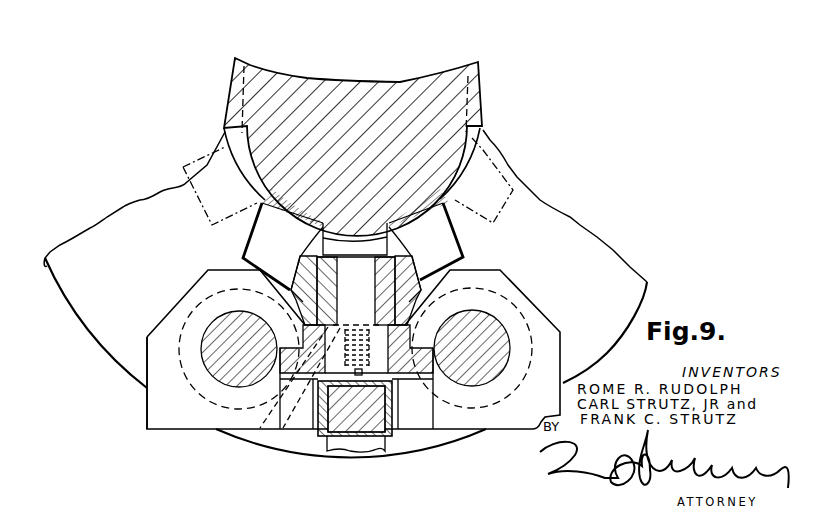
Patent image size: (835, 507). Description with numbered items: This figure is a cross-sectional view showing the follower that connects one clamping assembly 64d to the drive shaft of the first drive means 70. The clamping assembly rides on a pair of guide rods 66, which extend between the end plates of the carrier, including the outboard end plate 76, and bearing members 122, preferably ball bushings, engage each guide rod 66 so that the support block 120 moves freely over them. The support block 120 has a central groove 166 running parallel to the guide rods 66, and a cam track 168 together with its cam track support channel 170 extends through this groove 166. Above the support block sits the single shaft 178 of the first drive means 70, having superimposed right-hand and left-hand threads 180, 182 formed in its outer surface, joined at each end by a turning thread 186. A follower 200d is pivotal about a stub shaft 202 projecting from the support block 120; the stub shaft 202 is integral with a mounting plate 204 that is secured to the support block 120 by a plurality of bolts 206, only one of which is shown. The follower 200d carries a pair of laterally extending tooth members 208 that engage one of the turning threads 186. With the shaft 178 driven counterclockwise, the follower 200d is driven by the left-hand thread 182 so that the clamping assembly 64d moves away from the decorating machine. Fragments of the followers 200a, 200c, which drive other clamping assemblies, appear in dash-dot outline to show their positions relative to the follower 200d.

The clamping assembly 64d is at (138, 455).
The guide rods 66 is at (207, 360).
The first drive means 70 is at (187, 140).
The end plate 76 is at (83, 330).
The support block 120 is at (145, 408).
The bearing members 122 is at (177, 377).
The central groove 166 is at (318, 432).
The cam track 168 is at (367, 428).
The cam track support channel 170 is at (393, 432).
The shaft 178 is at (370, 88).
The right-hand thread 180 is at (468, 82).
The left-hand thread 182 is at (230, 83).
The turning thread 186 is at (255, 205).
The follower 200a is at (196, 206).
The follower 200c is at (514, 194).
The follower 200d is at (258, 276).
The stub shaft 202 is at (458, 266).
The mounting plate 204 is at (280, 373).
The bolts 206 is at (300, 392).
The tooth members 208 is at (292, 222).